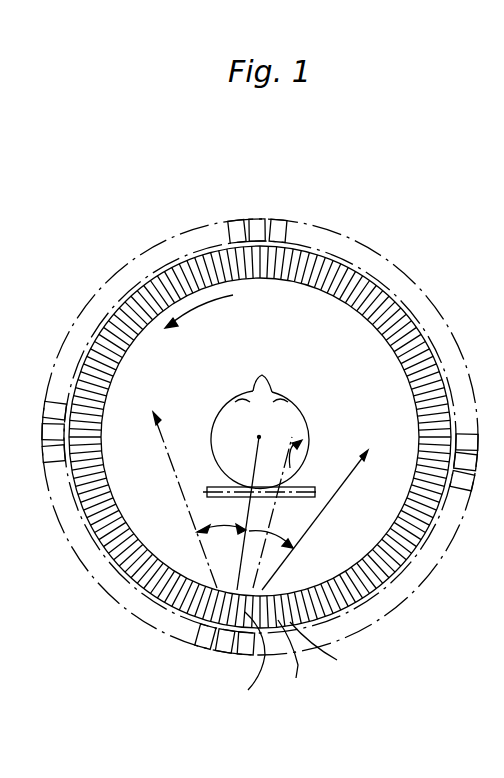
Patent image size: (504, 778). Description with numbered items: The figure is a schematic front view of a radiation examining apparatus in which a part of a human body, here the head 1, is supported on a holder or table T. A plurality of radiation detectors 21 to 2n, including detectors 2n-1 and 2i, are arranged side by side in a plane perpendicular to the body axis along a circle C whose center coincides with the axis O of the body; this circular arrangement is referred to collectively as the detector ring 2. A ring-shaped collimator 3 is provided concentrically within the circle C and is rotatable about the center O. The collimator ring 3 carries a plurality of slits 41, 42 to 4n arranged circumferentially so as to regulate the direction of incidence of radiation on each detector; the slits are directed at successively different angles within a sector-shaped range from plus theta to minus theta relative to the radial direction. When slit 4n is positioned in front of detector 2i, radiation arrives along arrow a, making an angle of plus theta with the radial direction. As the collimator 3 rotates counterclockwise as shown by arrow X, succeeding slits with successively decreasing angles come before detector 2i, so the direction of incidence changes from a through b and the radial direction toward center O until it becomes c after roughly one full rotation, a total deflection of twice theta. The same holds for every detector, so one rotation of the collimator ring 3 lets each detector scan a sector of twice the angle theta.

The head 1 is at (278, 392).
The detector ring 2 is at (403, 262).
The collimator ring 3 is at (312, 262).
The radiation detector 21 is at (281, 217).
The radiation detector 2n is at (258, 217).
The radiation detector 2n-1 is at (236, 217).
The radiation detector 2i is at (222, 656).
The slit 41 is at (297, 668).
The slit 42 is at (326, 658).
The slit 4n is at (251, 673).
The axis of the body O is at (262, 433).
The circle C is at (417, 308).
The arrow X is at (201, 300).
The arrow a is at (366, 452).
The direction b is at (295, 437).
The direction c is at (162, 434).
The table T is at (304, 470).
The angle theta is at (249, 529).